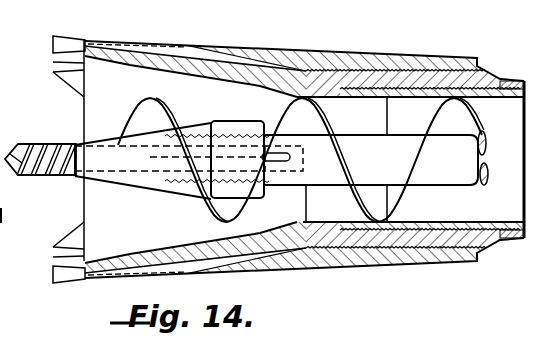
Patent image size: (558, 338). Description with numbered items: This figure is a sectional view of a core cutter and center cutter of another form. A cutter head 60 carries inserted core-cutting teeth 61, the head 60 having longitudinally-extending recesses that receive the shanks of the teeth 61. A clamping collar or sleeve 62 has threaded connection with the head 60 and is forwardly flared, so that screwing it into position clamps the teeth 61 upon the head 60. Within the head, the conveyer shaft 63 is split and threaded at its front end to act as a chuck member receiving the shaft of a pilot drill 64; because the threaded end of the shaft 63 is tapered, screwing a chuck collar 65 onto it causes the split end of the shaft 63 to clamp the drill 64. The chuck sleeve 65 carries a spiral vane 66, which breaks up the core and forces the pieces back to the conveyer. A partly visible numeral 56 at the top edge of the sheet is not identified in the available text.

The cutter head 60 is at (375, 56).
The core-cutting teeth 61 is at (52, 55).
The clamping collar or sleeve 62 is at (311, 50).
The conveyer shaft 63 is at (437, 172).
The pilot drill 64 is at (33, 144).
The chuck collar or sleeve 65 is at (113, 183).
The spiral vane 66 is at (217, 204).
The member 56 is at (133, 4).